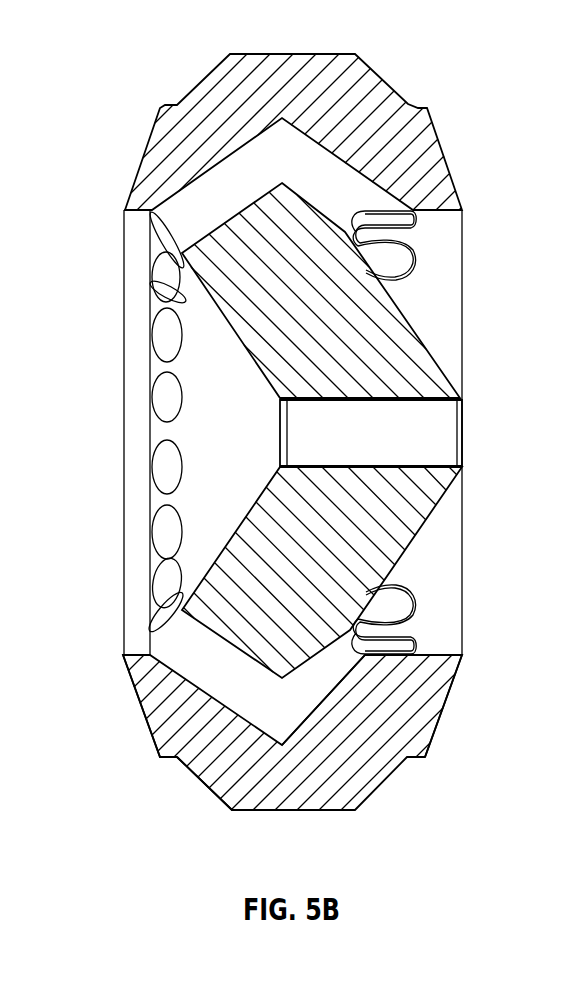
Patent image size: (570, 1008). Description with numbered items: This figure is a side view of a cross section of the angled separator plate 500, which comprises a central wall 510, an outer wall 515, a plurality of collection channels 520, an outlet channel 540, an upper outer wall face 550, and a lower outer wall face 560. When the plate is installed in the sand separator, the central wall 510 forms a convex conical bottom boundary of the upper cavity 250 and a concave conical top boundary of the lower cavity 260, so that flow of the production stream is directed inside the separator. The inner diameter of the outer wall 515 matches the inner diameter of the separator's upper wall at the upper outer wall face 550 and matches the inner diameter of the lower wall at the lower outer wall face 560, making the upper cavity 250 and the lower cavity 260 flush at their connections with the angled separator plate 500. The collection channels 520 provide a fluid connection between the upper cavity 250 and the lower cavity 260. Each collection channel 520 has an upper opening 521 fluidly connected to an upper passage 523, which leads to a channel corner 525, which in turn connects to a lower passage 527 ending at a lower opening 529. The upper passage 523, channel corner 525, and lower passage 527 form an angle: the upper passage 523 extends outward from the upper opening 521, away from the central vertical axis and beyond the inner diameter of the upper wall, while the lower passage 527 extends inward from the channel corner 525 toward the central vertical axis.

The angled separator plate 500 is at (464, 94).
The outer wall 515 is at (215, 90).
The upper cavity 250 is at (458, 330).
The lower cavity 260 is at (187, 292).
The central wall 510 is at (275, 362).
The collection channels 520 is at (163, 400).
The outlet channel 540 is at (447, 430).
The upper outer wall face 550 is at (438, 211).
The lower outer wall face 560 is at (148, 218).
The upper opening 521 is at (360, 657).
The upper passage 523 is at (327, 697).
The channel corner 525 is at (282, 707).
The lower passage 527 is at (198, 773).
The lower opening 529 is at (137, 667).